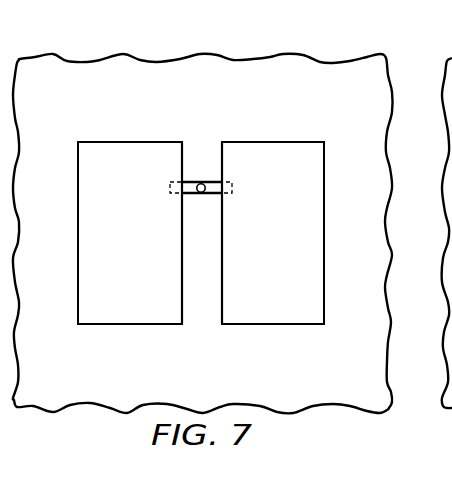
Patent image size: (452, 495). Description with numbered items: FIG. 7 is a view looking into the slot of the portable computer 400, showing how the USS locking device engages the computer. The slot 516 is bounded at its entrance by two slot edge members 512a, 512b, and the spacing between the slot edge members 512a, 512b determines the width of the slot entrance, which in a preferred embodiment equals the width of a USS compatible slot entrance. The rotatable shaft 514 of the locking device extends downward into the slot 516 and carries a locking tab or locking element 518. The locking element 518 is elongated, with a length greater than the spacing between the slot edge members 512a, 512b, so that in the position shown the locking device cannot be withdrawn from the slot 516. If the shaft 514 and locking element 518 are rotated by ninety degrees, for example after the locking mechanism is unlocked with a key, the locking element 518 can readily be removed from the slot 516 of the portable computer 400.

The portable computer 400 is at (87, 62).
The slot edge member 512a is at (125, 315).
The slot edge member 512b is at (277, 315).
The rotatable shaft 514 is at (193, 183).
The slot 516 is at (202, 315).
The locking element 518 is at (213, 195).